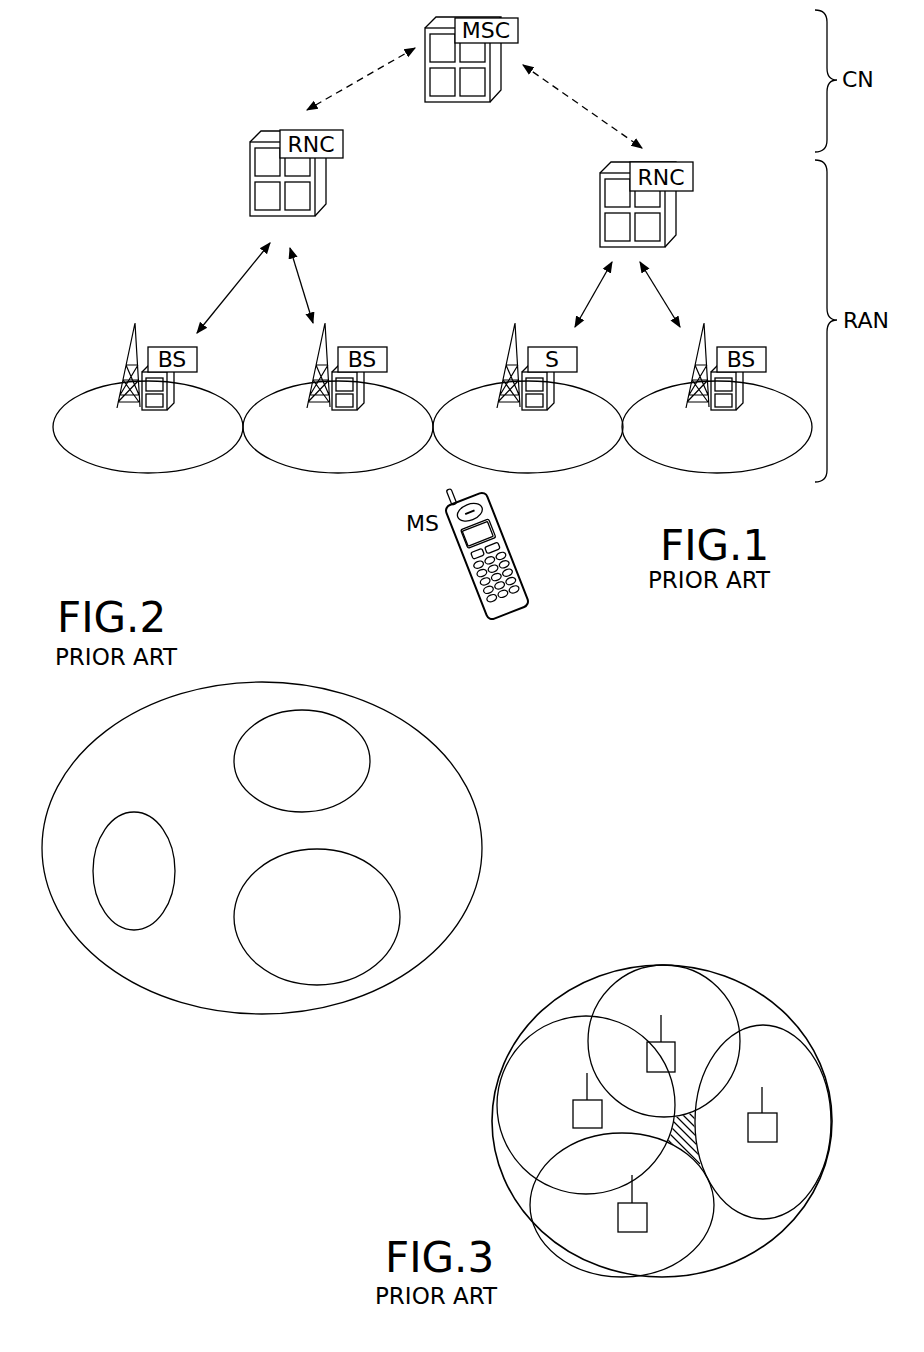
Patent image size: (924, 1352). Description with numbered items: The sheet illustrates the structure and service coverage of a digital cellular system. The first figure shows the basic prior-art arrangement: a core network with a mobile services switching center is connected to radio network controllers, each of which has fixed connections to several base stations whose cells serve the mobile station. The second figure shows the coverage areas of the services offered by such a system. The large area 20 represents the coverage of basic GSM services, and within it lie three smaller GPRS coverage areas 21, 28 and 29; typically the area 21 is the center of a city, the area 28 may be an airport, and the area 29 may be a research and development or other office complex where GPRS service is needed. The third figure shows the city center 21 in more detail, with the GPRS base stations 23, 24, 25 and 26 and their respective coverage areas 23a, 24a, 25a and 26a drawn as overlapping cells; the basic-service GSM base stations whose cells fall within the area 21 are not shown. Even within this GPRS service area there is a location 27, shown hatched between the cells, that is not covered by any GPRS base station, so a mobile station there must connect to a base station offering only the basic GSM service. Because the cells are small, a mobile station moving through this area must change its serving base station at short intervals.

In FIG. 2, the basic GSM service coverage area 20 is at (247, 682).
In FIG. 2, the GPRS coverage area 21 is at (363, 957).
In FIG. 3, the GPRS coverage area 21 is at (570, 992).
In FIG. 2, the GPRS coverage area 28 is at (342, 737).
In FIG. 2, the GPRS coverage area 29 is at (122, 908).
In FIG. 3, the GPRS base station 23 is at (598, 1245).
In FIG. 3, the coverage area 23a is at (630, 1217).
In FIG. 3, the GPRS base station 24 is at (583, 1115).
In FIG. 3, the coverage area 24a is at (517, 1120).
In FIG. 3, the GPRS base station 25 is at (677, 1048).
In FIG. 3, the coverage area 25a is at (667, 988).
In FIG. 3, the GPRS base station 26 is at (763, 1127).
In FIG. 3, the coverage area 26a is at (817, 1115).
In FIG. 3, the location outside GPRS coverage 27 is at (700, 1160).